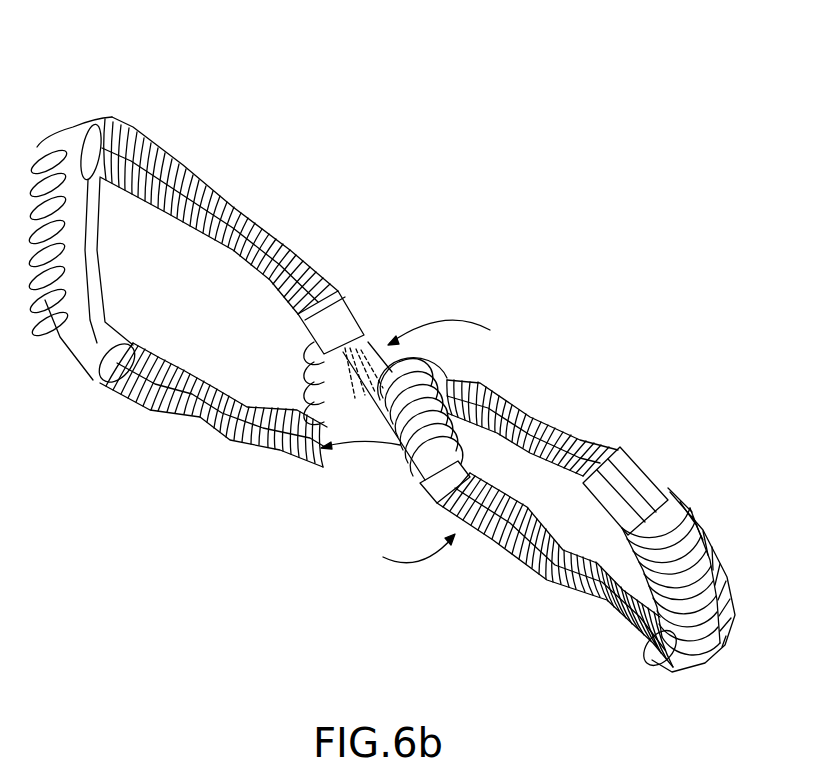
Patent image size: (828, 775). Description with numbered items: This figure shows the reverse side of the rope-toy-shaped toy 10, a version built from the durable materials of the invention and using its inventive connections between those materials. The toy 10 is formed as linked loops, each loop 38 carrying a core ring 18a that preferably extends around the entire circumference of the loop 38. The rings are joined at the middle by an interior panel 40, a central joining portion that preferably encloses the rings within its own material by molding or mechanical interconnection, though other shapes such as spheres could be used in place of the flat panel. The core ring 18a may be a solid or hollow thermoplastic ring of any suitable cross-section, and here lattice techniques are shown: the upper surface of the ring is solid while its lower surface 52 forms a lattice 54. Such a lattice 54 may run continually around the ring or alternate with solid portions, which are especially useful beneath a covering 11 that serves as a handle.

The toy 10 is at (327, 88).
The covering 11 is at (30, 175).
The core ring 18a is at (287, 263).
The loop 38 is at (300, 373).
The interior panel 40 is at (365, 433).
The lower surface 52 is at (133, 403).
The lattice 54 is at (183, 417).